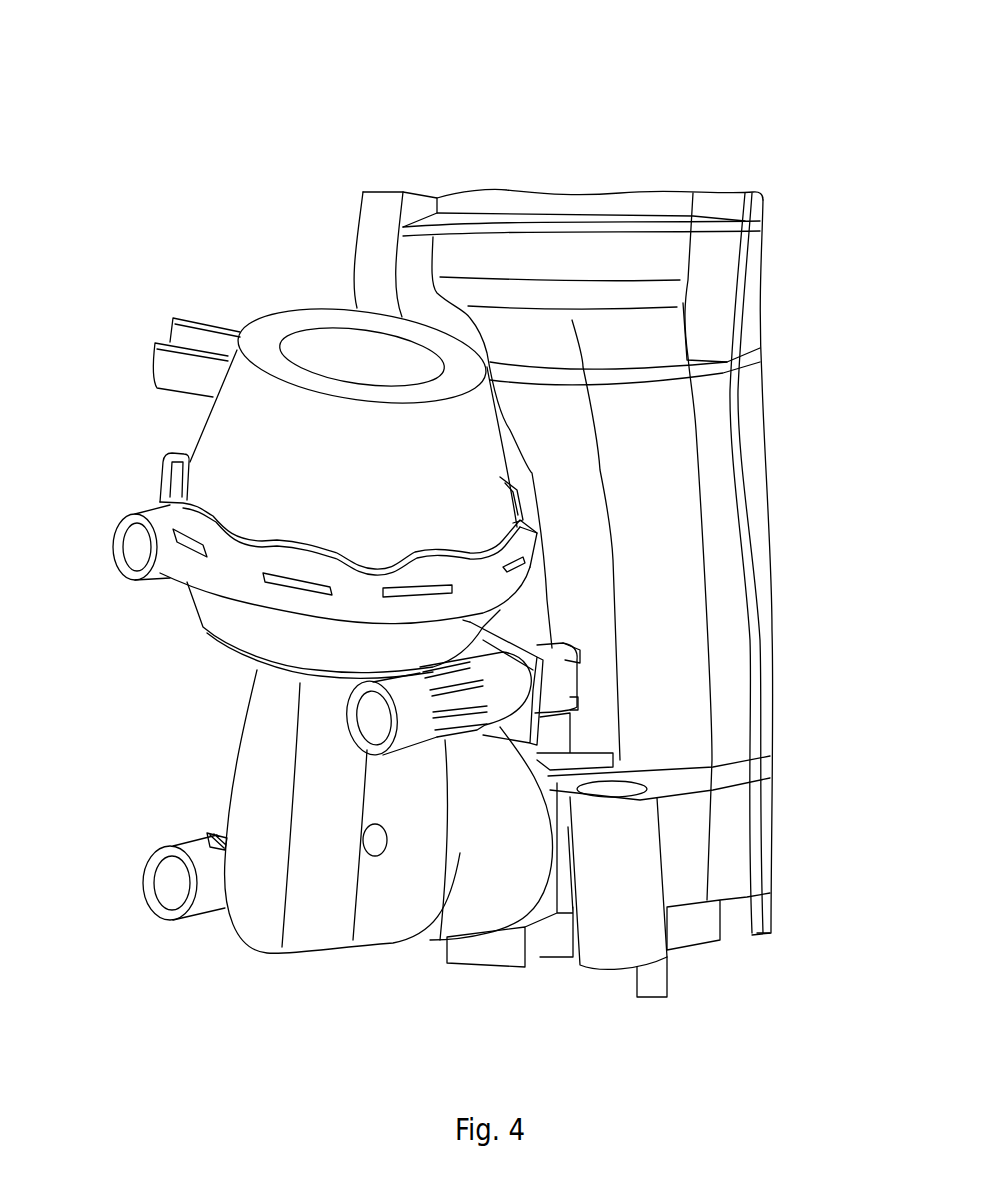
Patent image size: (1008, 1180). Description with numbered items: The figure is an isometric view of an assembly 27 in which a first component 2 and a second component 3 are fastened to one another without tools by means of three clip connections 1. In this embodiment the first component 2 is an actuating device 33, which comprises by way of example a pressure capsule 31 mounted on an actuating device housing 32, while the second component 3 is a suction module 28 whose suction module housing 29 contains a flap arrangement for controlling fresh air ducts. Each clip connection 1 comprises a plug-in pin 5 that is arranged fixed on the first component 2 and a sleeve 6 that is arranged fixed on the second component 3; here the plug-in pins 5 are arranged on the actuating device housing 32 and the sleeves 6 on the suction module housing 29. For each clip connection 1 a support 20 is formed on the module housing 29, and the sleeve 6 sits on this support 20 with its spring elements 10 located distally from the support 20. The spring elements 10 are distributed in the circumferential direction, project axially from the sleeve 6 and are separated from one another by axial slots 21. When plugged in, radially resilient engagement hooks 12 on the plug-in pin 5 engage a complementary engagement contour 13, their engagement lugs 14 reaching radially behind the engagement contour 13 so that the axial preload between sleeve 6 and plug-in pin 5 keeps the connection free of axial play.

The clip connection 1 is at (118, 593).
The first component 2 is at (352, 604).
The second component 3 is at (530, 511).
The plug-in pin 5 is at (169, 594).
The sleeve 6 is at (214, 830).
The spring element 10 is at (481, 704).
The engagement hook 12 is at (568, 643).
The engagement contour 13 is at (581, 689).
The engagement lug 14 is at (553, 641).
The support 20 is at (530, 731).
The axial slot 21 is at (468, 709).
The assembly 27 is at (288, 158).
The suction module 28 is at (530, 511).
The suction module housing 29 is at (708, 449).
The pressure capsule 31 is at (359, 475).
The actuating device housing 32 is at (246, 716).
The actuating device 33 is at (233, 294).